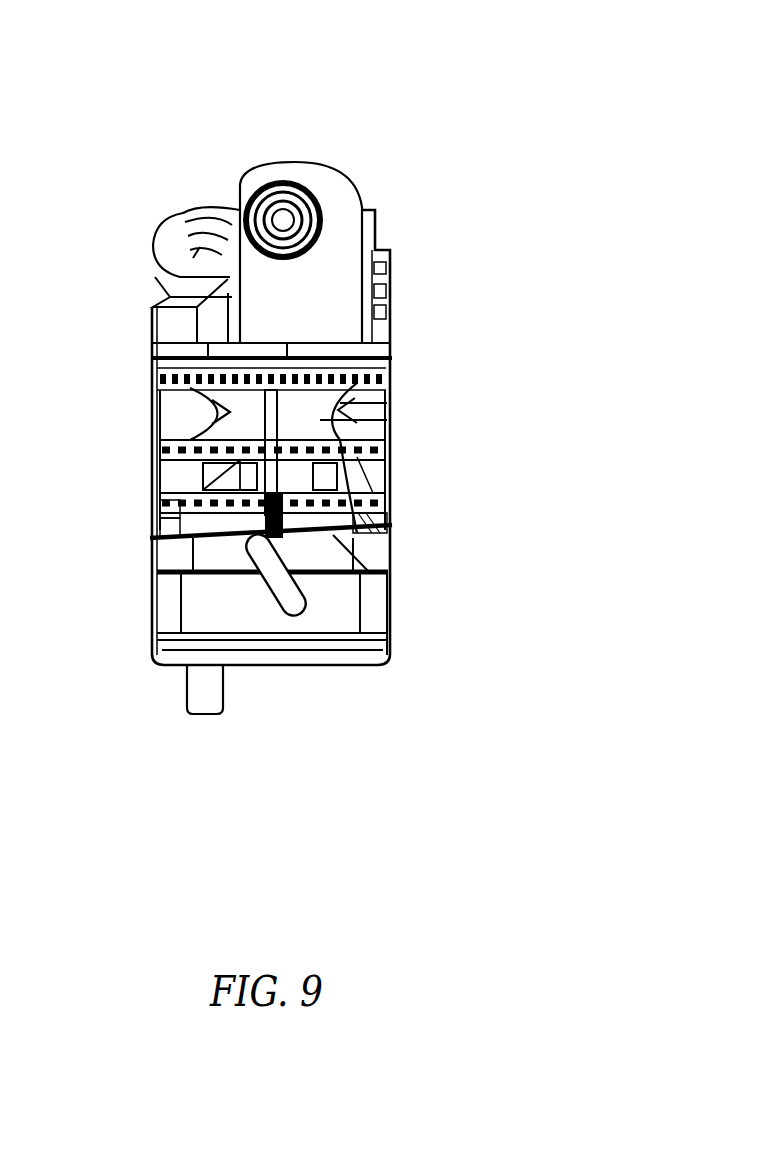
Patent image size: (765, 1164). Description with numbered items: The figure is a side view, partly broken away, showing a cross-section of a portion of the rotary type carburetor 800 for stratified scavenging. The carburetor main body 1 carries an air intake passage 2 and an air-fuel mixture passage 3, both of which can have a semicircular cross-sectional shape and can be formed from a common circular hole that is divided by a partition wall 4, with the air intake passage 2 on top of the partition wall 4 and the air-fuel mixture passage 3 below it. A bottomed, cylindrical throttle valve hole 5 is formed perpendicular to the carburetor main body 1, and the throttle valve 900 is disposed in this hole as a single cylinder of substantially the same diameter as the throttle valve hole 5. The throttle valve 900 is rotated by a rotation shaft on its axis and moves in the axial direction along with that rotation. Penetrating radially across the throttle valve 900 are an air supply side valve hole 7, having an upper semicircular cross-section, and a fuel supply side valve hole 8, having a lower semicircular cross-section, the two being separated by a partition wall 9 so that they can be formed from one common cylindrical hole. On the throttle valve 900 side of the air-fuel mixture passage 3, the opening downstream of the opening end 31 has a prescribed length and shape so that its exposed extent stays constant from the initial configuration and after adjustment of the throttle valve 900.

The rotary type carburetor 800 is at (576, 51).
The carburetor main body 1 is at (150, 322).
The air intake passage 2 is at (170, 418).
The air-fuel mixture passage 3 is at (160, 491).
The opening end 31 is at (237, 463).
The partition wall 4 is at (160, 453).
The throttle valve hole 5 is at (165, 385).
The air supply side valve hole 7 is at (390, 440).
The fuel supply side valve hole 8 is at (392, 482).
The partition wall 9 is at (385, 567).
The throttle valve 900 is at (392, 402).